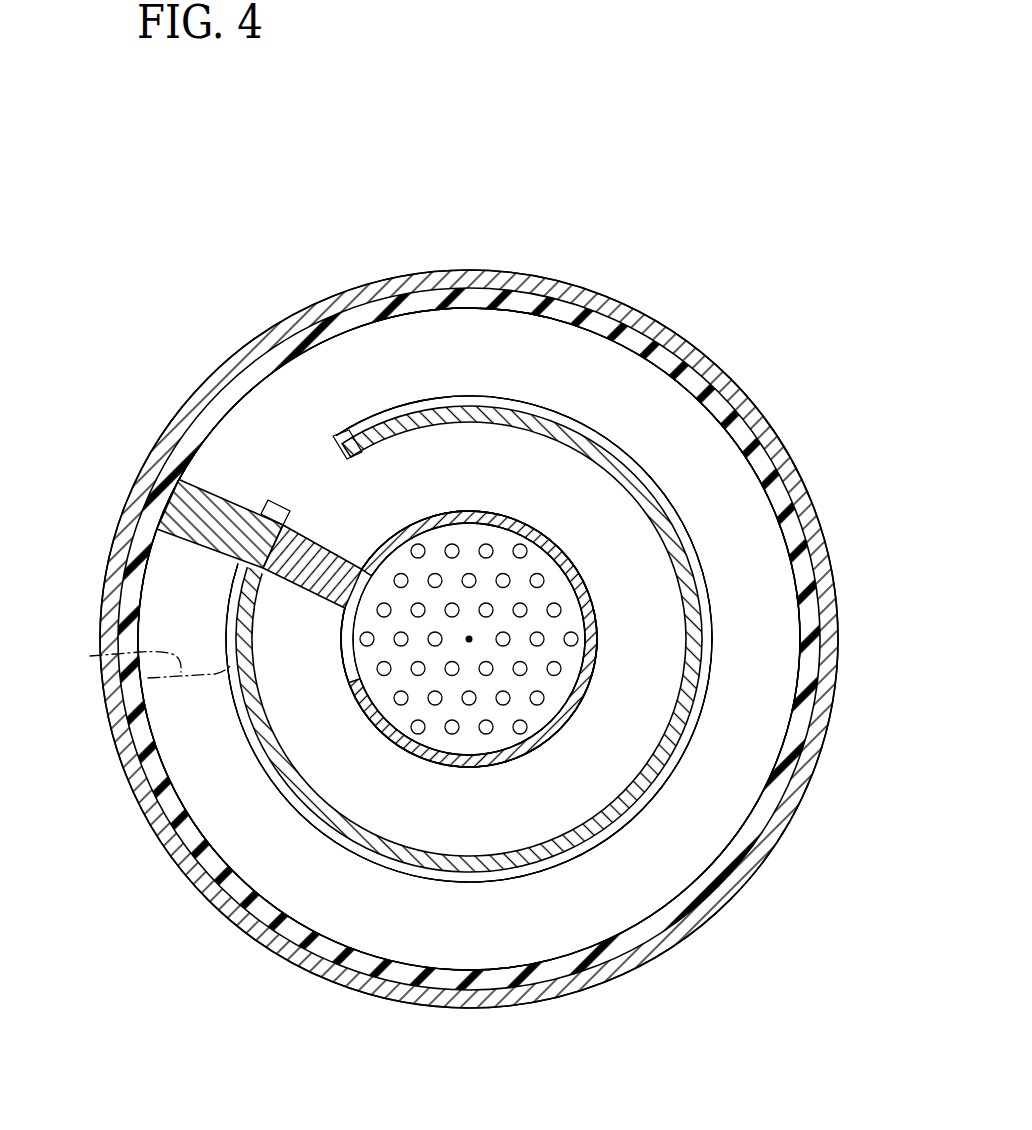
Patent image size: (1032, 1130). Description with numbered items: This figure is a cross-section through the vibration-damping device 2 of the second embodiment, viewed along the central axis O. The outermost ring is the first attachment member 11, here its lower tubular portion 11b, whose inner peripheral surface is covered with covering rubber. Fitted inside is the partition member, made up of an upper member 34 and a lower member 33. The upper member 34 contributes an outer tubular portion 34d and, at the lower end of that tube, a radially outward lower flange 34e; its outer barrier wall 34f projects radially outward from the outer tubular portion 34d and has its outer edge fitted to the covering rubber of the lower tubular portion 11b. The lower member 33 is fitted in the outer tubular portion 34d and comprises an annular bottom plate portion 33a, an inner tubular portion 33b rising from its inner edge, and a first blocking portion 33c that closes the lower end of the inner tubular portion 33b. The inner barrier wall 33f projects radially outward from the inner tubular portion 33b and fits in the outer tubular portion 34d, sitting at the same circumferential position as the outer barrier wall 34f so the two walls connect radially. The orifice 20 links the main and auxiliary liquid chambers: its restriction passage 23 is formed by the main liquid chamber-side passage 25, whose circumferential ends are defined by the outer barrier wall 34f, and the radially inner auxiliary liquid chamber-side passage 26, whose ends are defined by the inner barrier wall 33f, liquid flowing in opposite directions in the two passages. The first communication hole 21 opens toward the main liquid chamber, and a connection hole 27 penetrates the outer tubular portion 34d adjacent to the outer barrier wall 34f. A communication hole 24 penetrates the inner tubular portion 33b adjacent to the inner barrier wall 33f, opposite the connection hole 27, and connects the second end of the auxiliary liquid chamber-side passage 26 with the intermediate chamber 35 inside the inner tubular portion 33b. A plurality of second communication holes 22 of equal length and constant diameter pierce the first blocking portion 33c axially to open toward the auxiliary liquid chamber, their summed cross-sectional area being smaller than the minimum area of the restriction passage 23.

The vibration-damping device 2 is at (148, 213).
The first attachment member 11 is at (748, 383).
The lower tubular portion 11b is at (620, 303).
The orifice 20 is at (57, 959).
The first communication hole 21 is at (128, 660).
The second communication hole 22 is at (452, 546).
The restriction passage 23 is at (105, 959).
The communication hole 24 is at (345, 658).
The main liquid chamber-side passage 25 is at (719, 484).
The auxiliary liquid chamber-side passage 26 is at (612, 538).
The connection hole 27 is at (343, 442).
The lower member 33 is at (470, 782).
The bottom plate portion 33a is at (615, 755).
The inner tubular portion 33b is at (532, 770).
The first blocking portion 33c is at (432, 733).
The inner barrier wall 33f is at (325, 556).
The upper member 34 is at (610, 434).
The outer tubular portion 34d is at (670, 525).
The lower flange 34e is at (557, 930).
The outer barrier wall 34f is at (223, 507).
The intermediate chamber 35 is at (585, 657).
The central axis O is at (469, 639).